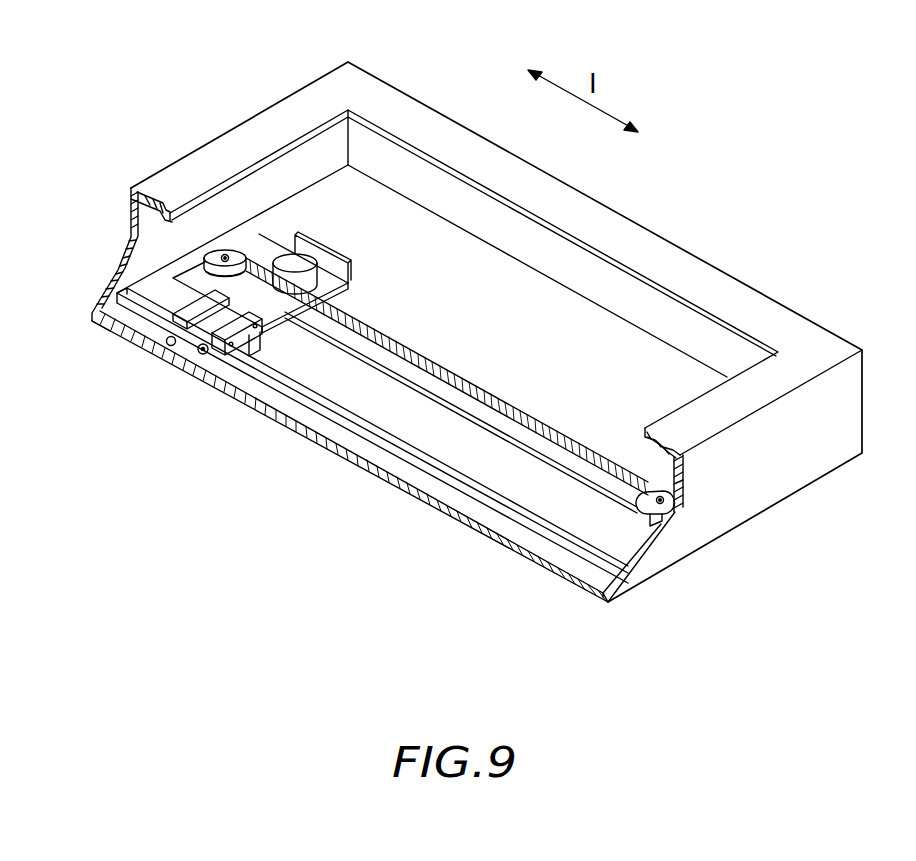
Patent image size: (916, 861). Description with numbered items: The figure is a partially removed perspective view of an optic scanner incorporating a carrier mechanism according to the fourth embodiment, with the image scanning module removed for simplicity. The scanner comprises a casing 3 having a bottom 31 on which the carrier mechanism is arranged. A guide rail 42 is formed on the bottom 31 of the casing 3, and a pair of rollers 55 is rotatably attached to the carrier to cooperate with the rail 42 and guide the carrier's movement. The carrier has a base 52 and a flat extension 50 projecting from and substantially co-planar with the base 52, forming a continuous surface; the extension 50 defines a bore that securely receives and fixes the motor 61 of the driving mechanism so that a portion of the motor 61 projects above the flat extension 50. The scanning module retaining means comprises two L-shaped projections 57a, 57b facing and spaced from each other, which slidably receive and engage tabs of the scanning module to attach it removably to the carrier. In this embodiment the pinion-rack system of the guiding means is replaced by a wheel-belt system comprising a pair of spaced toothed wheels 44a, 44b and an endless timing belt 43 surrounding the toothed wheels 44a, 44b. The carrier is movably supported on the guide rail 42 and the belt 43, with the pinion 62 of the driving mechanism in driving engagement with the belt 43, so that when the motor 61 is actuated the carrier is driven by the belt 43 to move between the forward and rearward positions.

The casing 3 is at (805, 460).
The bottom 31 is at (677, 388).
The guide rail 42 is at (348, 422).
The endless timing belt 43 is at (472, 418).
The toothed wheel 44a is at (651, 515).
The toothed wheel 44b is at (223, 250).
The flat extension 50 is at (265, 288).
The base 52 is at (200, 322).
The rollers 55 is at (216, 340).
The L-shaped projection 57a is at (165, 343).
The L-shaped projection 57b is at (207, 354).
The motor 61 is at (292, 253).
The pinion 62 is at (348, 318).